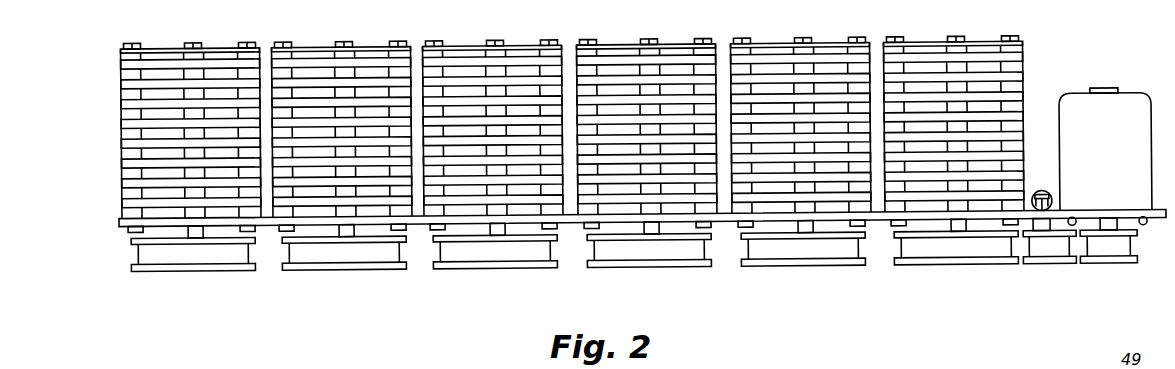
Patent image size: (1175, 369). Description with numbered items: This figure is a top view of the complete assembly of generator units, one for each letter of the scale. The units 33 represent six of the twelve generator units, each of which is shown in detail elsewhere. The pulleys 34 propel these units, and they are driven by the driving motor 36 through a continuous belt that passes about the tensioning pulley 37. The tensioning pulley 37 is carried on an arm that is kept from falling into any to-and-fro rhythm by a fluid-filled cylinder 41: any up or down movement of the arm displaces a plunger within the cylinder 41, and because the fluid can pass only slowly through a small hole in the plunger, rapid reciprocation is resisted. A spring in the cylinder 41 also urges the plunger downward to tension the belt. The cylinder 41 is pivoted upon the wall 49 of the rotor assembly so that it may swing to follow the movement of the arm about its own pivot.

The generator units 33 is at (163, 41).
The pulleys 34 is at (361, 268).
The driving motor 36 is at (1128, 101).
The tensioning pulley 37 is at (1056, 269).
The cylinder 41 is at (1042, 198).
The wall of the rotor assembly 49 is at (1166, 222).